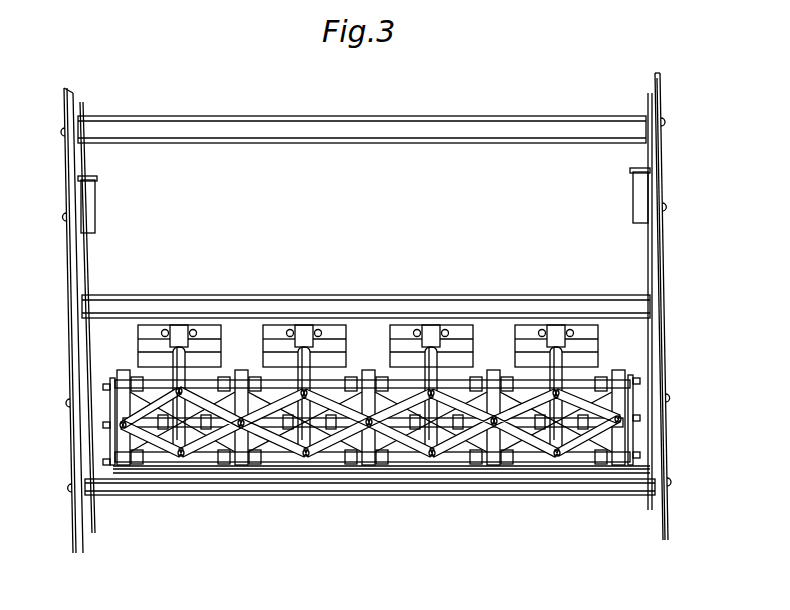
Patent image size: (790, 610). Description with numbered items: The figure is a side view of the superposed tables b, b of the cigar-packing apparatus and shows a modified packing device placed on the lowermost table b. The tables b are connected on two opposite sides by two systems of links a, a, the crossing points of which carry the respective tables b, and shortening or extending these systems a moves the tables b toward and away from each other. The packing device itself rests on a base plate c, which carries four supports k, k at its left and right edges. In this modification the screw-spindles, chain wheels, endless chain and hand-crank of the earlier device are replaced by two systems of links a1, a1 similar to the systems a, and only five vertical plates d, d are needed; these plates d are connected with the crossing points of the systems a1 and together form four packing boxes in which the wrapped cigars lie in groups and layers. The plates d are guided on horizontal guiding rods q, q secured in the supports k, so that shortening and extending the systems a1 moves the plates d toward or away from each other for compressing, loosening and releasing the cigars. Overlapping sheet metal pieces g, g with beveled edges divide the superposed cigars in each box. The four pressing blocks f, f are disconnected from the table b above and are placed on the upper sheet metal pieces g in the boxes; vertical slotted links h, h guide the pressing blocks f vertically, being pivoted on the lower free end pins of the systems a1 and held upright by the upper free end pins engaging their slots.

The system of links a is at (75, 442).
The system of links a1 is at (578, 435).
The table b is at (222, 128).
The base plate c is at (150, 472).
The vertical plate d is at (240, 370).
The pressing block f is at (348, 332).
The sheet metal piece g is at (600, 370).
The vertical slotted link h is at (417, 465).
The support k is at (107, 382).
The horizontal guiding rod q is at (342, 388).